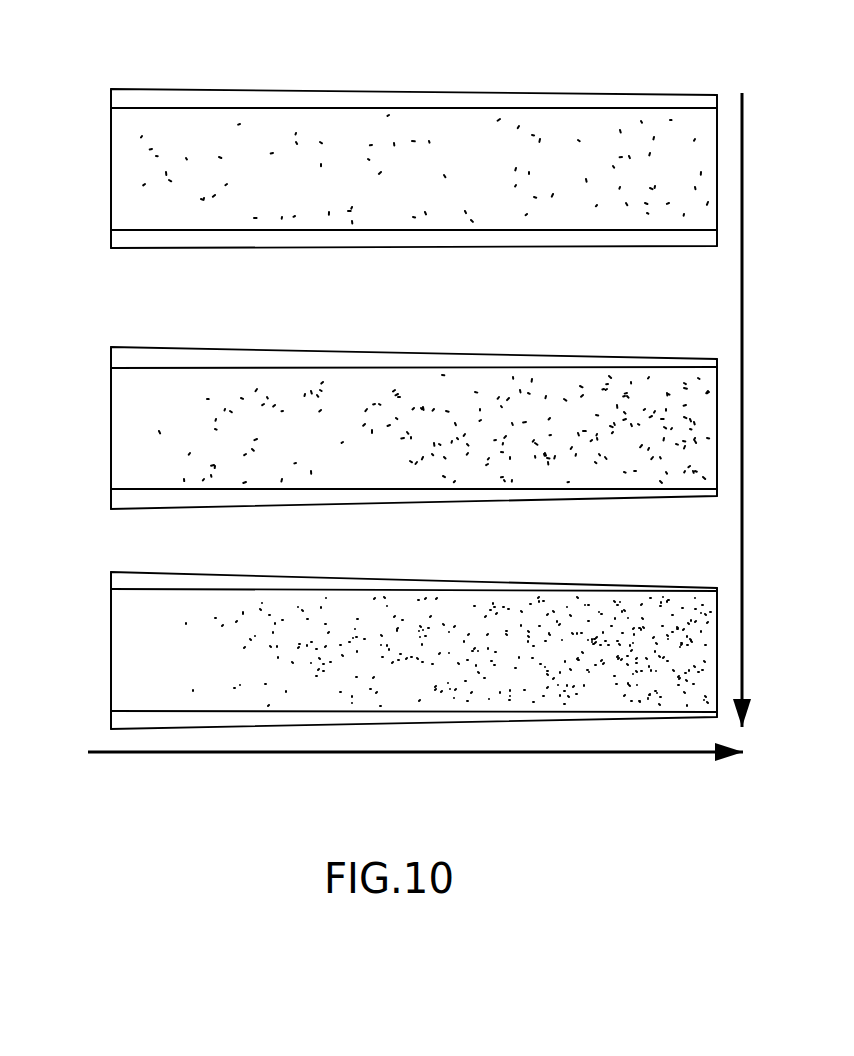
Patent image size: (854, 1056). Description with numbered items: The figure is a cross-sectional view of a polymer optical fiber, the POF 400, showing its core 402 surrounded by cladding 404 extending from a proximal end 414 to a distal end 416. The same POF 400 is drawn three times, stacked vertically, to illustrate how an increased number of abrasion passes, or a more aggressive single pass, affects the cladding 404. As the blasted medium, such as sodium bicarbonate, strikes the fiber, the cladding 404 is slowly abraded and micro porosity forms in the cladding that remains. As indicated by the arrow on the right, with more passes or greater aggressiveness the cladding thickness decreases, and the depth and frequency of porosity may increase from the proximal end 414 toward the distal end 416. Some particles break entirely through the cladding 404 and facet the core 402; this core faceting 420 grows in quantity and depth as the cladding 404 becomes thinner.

The POF 400 is at (241, 88).
The core 402 is at (413, 165).
The cladding 404 is at (155, 95).
The proximal end 414 is at (118, 93).
The distal end 416 is at (668, 93).
The core faceting 420 is at (600, 137).